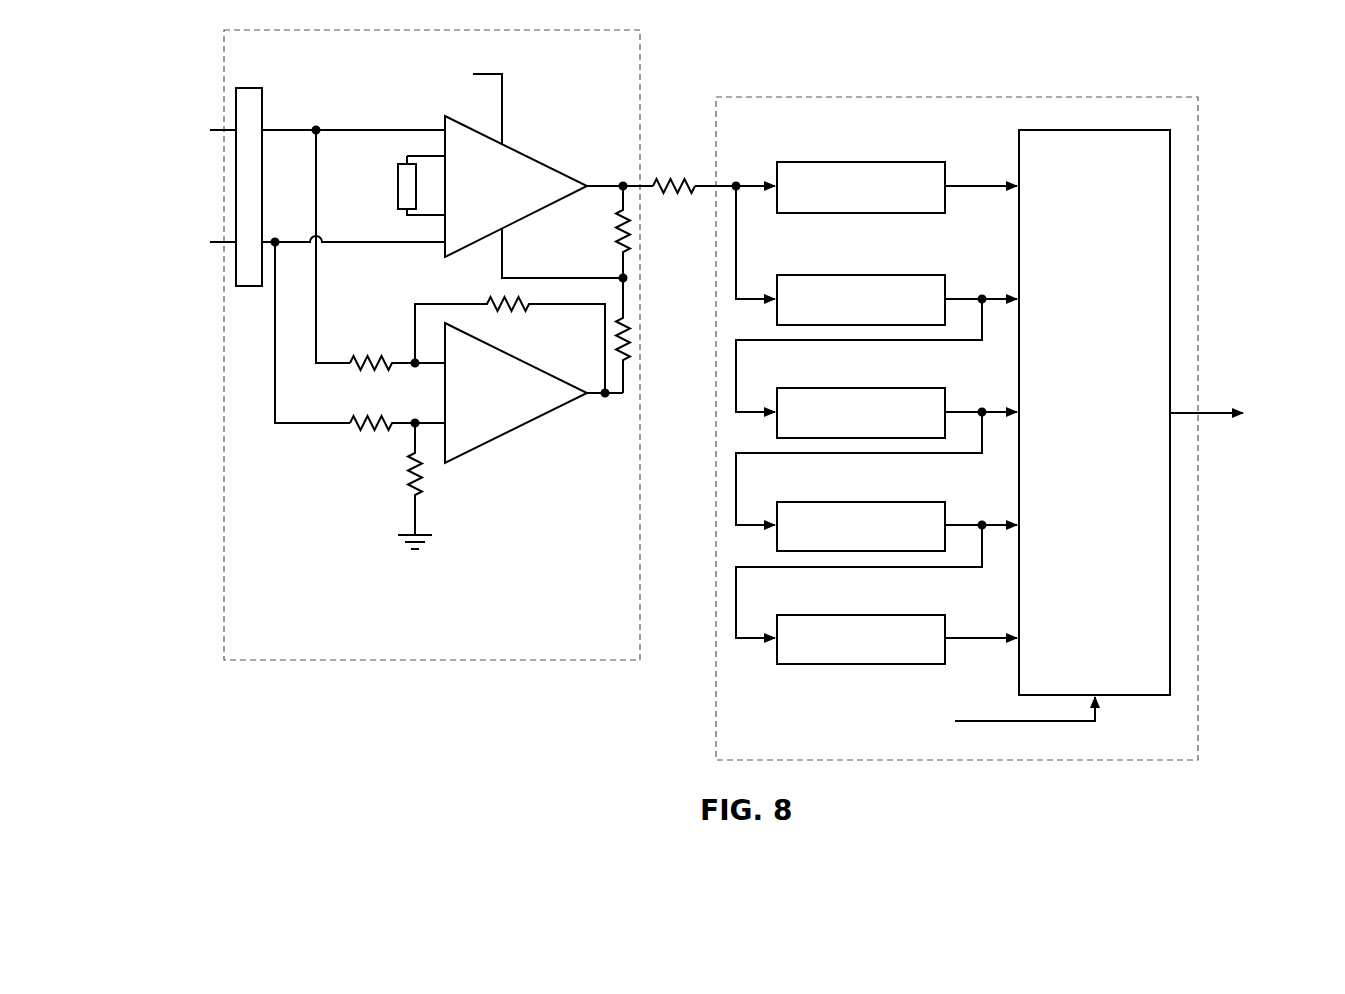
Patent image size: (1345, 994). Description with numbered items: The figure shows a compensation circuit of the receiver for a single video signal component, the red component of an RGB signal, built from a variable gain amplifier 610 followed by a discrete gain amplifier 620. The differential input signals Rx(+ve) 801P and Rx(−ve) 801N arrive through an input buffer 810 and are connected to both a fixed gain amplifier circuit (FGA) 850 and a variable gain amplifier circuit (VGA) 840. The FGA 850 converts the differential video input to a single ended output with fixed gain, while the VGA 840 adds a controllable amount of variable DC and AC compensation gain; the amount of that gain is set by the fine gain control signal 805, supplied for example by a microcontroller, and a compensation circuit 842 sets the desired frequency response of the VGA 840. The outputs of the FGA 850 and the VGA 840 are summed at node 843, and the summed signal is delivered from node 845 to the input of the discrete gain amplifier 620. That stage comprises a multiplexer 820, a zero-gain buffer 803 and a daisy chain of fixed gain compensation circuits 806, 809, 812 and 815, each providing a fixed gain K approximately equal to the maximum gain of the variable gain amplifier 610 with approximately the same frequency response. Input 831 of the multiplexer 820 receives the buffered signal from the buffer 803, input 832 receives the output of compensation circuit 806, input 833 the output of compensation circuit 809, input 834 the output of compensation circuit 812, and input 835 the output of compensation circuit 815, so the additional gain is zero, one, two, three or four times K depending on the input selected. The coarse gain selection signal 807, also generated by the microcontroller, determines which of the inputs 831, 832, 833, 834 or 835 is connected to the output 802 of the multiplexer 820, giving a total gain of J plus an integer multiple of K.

The variable gain amplifier 610 is at (577, 23).
The discrete gain amplifier 620 is at (784, 96).
The differential input signal Rx(+ve) 801P is at (106, 116).
The differential input signal Rx(−ve) 801N is at (112, 228).
The input buffer 810 is at (236, 274).
The fine gain control signal 805 is at (342, 44).
The compensation circuit 842 is at (398, 188).
The variable gain amplifier circuit (VGA) 840 is at (518, 150).
The node 845 is at (628, 182).
The node 843 is at (627, 279).
The fixed gain amplifier circuit (FGA) 850 is at (520, 428).
The zero-gain buffer 803 is at (846, 162).
The fixed gain compensation circuit 806 is at (846, 275).
The fixed gain compensation circuit 809 is at (846, 388).
The fixed gain compensation circuit 812 is at (846, 502).
The fixed gain compensation circuit 815 is at (846, 615).
The multiplexer 820 is at (1097, 100).
The input of multiplexer 831 is at (1105, 178).
The input of multiplexer 832 is at (1105, 291).
The input of multiplexer 833 is at (1105, 404).
The input of multiplexer 834 is at (1105, 518).
The input of multiplexer 835 is at (1105, 631).
The coarse gain selection signal 807 is at (742, 711).
The output of multiplexer 802 is at (1256, 392).